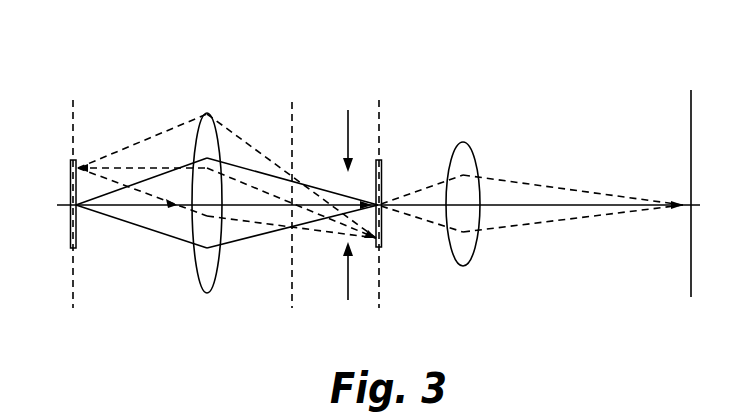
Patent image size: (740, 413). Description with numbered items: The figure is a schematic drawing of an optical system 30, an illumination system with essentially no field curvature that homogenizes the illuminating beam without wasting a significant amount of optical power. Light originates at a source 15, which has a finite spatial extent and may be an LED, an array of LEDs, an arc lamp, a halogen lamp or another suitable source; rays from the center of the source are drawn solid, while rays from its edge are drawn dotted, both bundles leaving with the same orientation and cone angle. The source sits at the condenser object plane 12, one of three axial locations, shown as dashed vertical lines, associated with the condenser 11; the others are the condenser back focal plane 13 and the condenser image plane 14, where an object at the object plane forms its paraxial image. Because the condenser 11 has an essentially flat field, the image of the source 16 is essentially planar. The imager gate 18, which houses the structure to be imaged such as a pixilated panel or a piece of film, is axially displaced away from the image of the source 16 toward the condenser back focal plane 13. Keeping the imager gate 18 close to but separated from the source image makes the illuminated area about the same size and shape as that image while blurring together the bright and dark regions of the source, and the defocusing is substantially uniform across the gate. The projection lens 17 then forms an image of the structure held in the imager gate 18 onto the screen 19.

The optical system 30 is at (124, 82).
The condenser 11 is at (188, 277).
The condenser object plane 12 is at (72, 292).
The condenser back focal plane 13 is at (291, 293).
The condenser image plane 14 is at (378, 293).
The source 15 is at (78, 233).
The image of the source 16 is at (383, 240).
The projection lens 17 is at (477, 160).
The imager gate 18 is at (349, 128).
The screen 19 is at (690, 128).